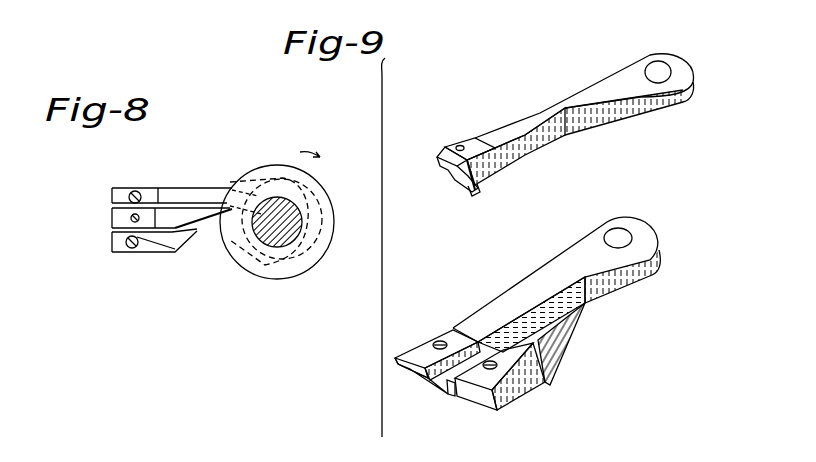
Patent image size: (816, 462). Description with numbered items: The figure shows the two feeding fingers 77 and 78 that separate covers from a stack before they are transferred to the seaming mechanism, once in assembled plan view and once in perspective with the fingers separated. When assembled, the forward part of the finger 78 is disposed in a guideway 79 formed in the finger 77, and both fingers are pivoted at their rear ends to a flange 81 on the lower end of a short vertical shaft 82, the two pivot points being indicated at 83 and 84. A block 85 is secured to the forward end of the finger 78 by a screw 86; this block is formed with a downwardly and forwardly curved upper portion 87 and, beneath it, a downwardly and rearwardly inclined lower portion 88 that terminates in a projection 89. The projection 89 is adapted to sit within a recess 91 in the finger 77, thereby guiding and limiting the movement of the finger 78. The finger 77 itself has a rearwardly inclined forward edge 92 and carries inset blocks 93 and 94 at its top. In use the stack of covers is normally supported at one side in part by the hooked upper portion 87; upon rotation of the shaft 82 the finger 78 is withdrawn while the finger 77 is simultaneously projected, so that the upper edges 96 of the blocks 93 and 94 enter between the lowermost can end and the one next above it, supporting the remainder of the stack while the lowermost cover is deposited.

In FIG. 8, the finger 77 is at (188, 195).
In FIG. 9, the finger 77 is at (512, 300).
In FIG. 8, the finger 78 is at (210, 230).
In FIG. 9, the finger 78 is at (540, 103).
In FIG. 8, the guideway 79 is at (139, 250).
In FIG. 9, the guideway 79 is at (538, 333).
In FIG. 8, the flange 81 is at (320, 190).
In FIG. 8, the short vertical shaft 82 is at (303, 221).
In FIG. 8, the pivot point 83 is at (280, 280).
In FIG. 8, the pivot point 84 is at (283, 298).
In FIG. 8, the block 85 is at (112, 222).
In FIG. 9, the block 85 is at (475, 140).
In FIG. 9, the screw 86 is at (458, 146).
In FIG. 9, the upper portion 87 is at (443, 163).
In FIG. 9, the lower portion 88 is at (458, 183).
In FIG. 9, the projection 89 is at (471, 197).
In FIG. 9, the recess 91 is at (450, 385).
In FIG. 9, the forward edge 92 is at (423, 382).
In FIG. 8, the inset block 93 is at (126, 196).
In FIG. 9, the inset block 93 is at (415, 353).
In FIG. 8, the inset block 94 is at (120, 246).
In FIG. 9, the inset block 94 is at (486, 372).
In FIG. 9, the upper edges 96 is at (398, 365).